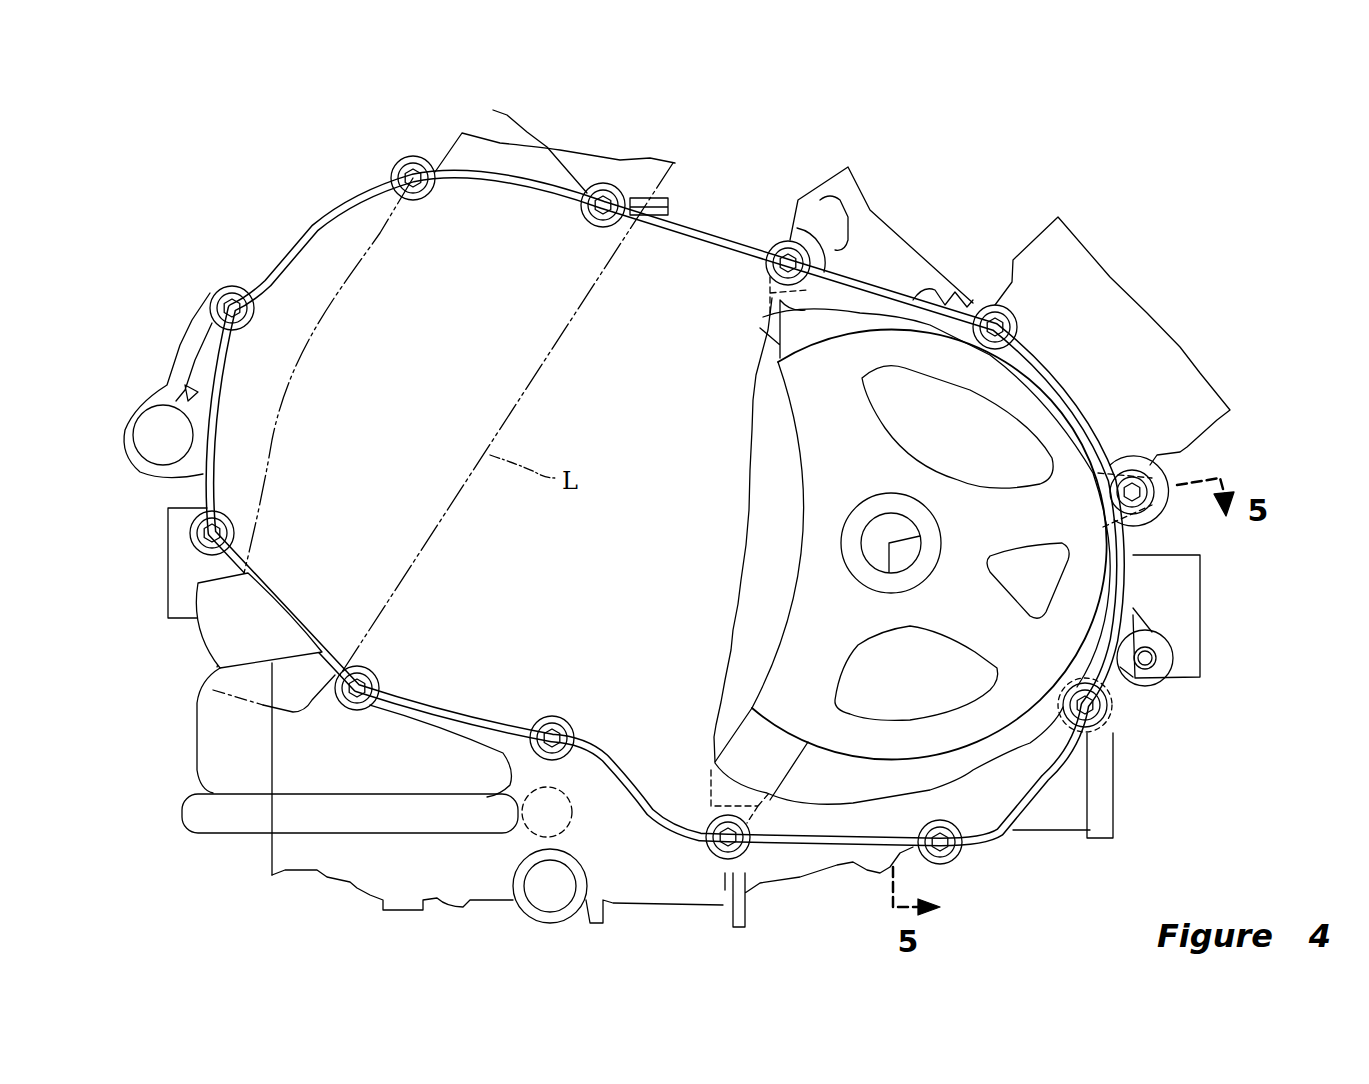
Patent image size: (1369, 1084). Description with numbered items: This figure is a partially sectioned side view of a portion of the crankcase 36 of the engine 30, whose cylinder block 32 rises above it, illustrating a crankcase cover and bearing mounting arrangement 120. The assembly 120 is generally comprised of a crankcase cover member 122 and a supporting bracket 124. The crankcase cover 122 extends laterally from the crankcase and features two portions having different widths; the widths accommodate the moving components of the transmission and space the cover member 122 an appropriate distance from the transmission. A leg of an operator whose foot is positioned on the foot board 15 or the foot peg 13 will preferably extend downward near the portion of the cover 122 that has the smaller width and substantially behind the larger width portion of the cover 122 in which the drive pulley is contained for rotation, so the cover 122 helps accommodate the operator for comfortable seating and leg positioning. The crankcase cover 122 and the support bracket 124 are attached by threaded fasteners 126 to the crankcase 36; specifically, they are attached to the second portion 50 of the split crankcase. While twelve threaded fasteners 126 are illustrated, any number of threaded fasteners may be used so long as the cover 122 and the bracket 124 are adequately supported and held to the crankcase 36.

The foot peg 13 is at (553, 790).
The foot board 15 is at (249, 835).
The engine 30 is at (962, 224).
The cylinder block 32 is at (1063, 252).
The crankcase 36 is at (1125, 778).
The second portion 50 is at (1043, 783).
The crankcase cover and bearing mounting arrangement 120 is at (702, 266).
The crankcase cover member 122 is at (316, 268).
The supporting bracket 124 is at (805, 533).
The threaded fasteners 126 is at (493, 110).